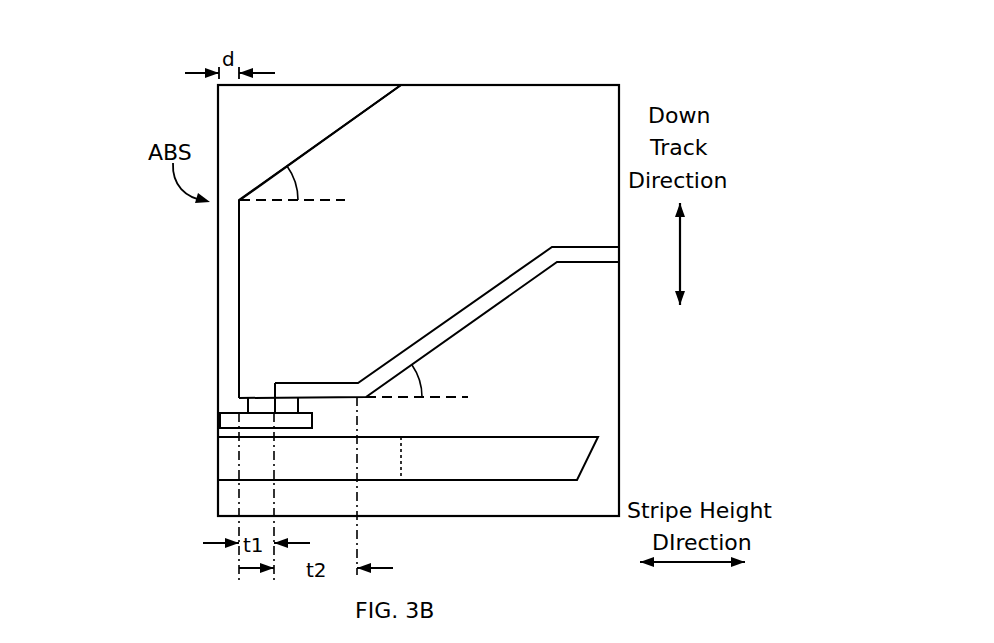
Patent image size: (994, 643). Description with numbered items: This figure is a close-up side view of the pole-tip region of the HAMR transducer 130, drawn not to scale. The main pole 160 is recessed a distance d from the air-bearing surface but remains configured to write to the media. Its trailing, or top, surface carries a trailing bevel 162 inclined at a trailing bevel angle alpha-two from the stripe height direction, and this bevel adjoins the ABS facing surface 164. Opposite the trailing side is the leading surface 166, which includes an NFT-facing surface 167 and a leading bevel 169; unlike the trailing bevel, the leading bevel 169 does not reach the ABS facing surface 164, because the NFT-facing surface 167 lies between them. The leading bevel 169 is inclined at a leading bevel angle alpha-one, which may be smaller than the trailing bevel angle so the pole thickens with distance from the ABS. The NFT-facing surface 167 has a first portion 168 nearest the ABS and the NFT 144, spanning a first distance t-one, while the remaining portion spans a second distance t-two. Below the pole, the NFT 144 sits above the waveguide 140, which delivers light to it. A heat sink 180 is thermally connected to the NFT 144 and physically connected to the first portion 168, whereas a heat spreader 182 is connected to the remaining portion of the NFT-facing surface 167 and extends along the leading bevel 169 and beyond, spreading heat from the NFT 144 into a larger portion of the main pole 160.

The HAMR transducer 130 is at (131, 31).
The waveguide 140 is at (408, 458).
The NFT 144 is at (212, 418).
The main pole 160 is at (371, 241).
The trailing bevel 162 is at (292, 143).
The ABS facing surface 164 is at (226, 307).
The leading surface 166 is at (502, 396).
The NFT-facing surface 167 is at (328, 416).
The first portion of the NFT-facing surface 168 is at (256, 379).
The leading bevel 169 is at (462, 352).
The heat sink 180 is at (247, 412).
The heat spreader 182 is at (570, 263).